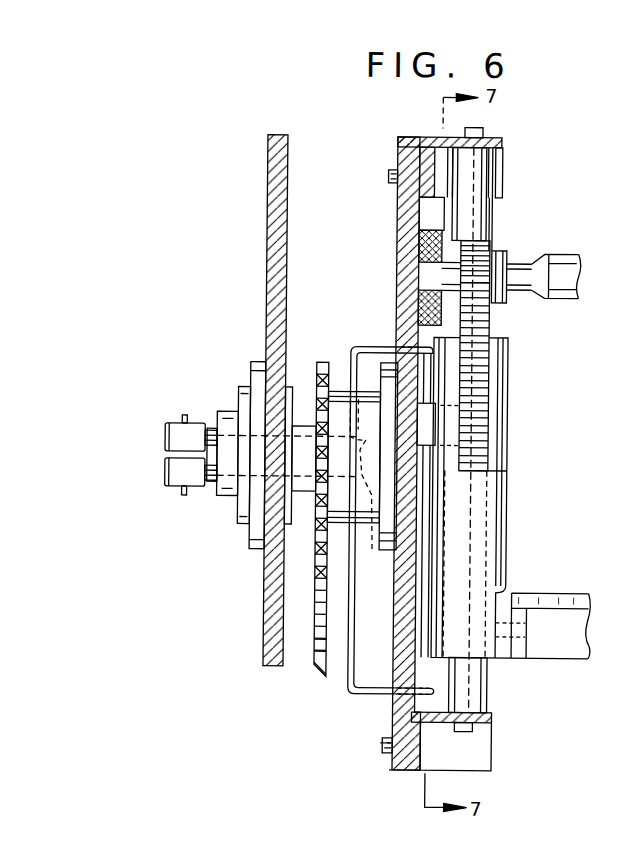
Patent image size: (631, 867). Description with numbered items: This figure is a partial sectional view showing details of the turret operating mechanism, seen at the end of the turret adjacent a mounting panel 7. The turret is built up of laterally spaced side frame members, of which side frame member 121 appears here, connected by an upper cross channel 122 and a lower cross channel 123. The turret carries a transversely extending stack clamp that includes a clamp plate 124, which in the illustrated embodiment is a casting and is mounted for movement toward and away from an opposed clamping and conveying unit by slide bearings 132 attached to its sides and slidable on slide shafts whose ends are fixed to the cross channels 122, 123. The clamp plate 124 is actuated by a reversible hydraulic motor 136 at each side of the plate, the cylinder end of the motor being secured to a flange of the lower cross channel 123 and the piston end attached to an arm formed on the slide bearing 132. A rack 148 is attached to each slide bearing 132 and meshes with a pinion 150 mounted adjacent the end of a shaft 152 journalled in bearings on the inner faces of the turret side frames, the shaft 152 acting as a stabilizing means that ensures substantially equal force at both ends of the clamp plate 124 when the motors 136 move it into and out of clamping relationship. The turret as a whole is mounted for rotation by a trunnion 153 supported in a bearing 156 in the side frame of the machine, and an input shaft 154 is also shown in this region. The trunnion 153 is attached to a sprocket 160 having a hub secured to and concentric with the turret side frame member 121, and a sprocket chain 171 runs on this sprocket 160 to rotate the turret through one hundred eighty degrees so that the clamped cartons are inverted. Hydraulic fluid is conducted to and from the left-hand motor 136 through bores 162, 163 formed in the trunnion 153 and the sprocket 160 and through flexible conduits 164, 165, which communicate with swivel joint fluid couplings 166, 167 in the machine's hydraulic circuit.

The mounting panel 7 is at (273, 177).
The side frame member 121 is at (400, 257).
The upper cross channel 122 is at (490, 138).
The lower cross channel 123 is at (483, 750).
The clamp plate 124 is at (562, 597).
The slide bearing 132 is at (498, 510).
The reversible hydraulic motor 136 is at (427, 603).
The rack 148 is at (480, 380).
The pinion 150 is at (475, 243).
The shaft 152 is at (430, 273).
The trunnion 153 is at (297, 427).
The input shaft 154 is at (556, 285).
The bearing 156 is at (253, 365).
The sprocket 160 is at (321, 363).
The bore 162 is at (340, 447).
The bore 163 is at (376, 536).
The flexible conduit 164 is at (372, 341).
The flexible conduit 165 is at (373, 695).
The swivel joint fluid coupling 166 is at (183, 423).
The swivel joint fluid coupling 167 is at (182, 490).
The sprocket chain 171 is at (312, 663).